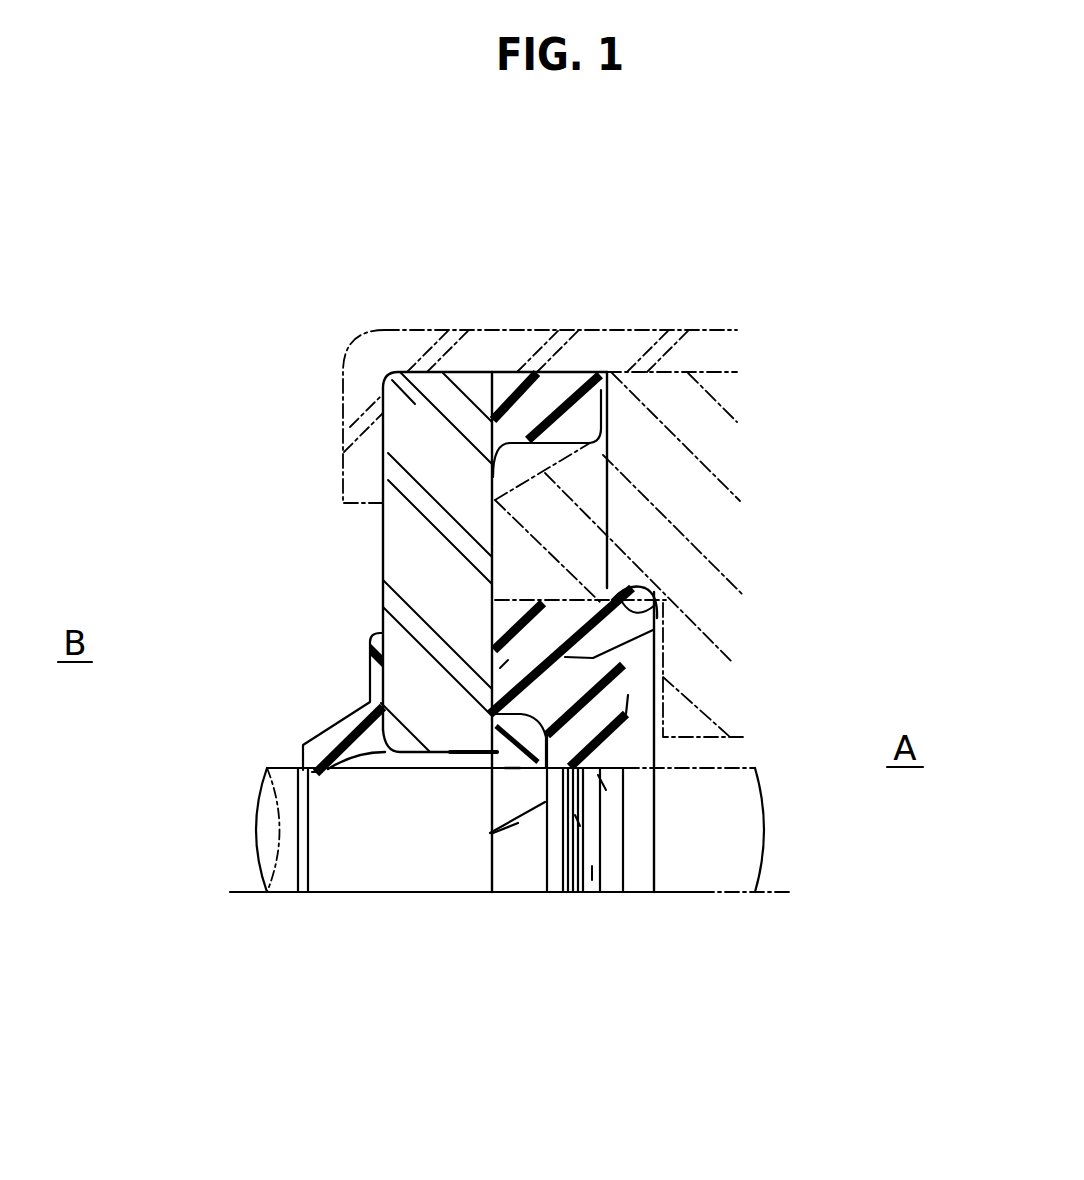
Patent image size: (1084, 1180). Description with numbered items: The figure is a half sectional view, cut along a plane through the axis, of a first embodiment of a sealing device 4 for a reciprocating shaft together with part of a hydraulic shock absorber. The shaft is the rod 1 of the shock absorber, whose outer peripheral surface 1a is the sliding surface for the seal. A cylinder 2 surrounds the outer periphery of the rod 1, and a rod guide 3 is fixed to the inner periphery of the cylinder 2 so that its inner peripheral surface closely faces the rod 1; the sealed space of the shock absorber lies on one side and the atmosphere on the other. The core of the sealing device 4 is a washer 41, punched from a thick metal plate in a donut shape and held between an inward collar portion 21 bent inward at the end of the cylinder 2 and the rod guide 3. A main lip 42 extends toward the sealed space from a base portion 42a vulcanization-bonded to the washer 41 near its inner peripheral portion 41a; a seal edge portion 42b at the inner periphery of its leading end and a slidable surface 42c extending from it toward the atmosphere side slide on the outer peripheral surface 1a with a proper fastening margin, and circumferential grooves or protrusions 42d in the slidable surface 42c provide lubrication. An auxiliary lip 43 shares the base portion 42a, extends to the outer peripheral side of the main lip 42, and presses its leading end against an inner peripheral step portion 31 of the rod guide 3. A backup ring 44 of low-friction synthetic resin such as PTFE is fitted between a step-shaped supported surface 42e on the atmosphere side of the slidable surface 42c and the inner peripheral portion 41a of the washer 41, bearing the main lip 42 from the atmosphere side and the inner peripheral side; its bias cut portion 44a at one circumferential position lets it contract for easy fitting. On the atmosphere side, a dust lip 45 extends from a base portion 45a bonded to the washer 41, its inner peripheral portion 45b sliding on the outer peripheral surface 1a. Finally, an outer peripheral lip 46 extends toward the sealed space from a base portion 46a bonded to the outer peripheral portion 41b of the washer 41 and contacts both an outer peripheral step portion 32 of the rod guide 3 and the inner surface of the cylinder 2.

The rod 1 is at (250, 821).
The outer peripheral surface 1a is at (287, 767).
The cylinder 2 is at (695, 332).
The inward collar portion 21 is at (345, 410).
The rod guide 3 is at (711, 442).
The inner peripheral step portion 31 is at (645, 604).
The outer peripheral step portion 32 is at (588, 370).
The sealing device 4 is at (337, 525).
The washer 41 is at (448, 435).
The inner peripheral portion 41a is at (437, 720).
The outer peripheral portion 41b is at (417, 407).
The main lip 42 is at (624, 693).
The base portion 42a is at (504, 667).
The seal edge portion 42b is at (600, 782).
The slidable surface 42c is at (592, 873).
The grooves or protrusions 42d is at (577, 820).
The supported surface 42e is at (488, 757).
The auxiliary lip 43 is at (640, 588).
The backup ring 44 is at (510, 778).
The cut portion 44a is at (518, 823).
The dust lip 45 is at (318, 716).
The base portion 45a is at (367, 708).
The inner peripheral portion 45b is at (321, 765).
The outer peripheral lip 46 is at (549, 386).
The base portion 46a is at (490, 397).